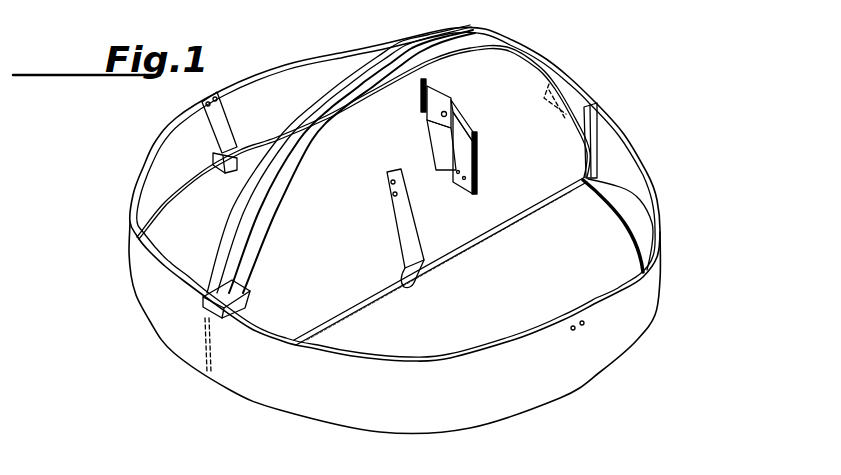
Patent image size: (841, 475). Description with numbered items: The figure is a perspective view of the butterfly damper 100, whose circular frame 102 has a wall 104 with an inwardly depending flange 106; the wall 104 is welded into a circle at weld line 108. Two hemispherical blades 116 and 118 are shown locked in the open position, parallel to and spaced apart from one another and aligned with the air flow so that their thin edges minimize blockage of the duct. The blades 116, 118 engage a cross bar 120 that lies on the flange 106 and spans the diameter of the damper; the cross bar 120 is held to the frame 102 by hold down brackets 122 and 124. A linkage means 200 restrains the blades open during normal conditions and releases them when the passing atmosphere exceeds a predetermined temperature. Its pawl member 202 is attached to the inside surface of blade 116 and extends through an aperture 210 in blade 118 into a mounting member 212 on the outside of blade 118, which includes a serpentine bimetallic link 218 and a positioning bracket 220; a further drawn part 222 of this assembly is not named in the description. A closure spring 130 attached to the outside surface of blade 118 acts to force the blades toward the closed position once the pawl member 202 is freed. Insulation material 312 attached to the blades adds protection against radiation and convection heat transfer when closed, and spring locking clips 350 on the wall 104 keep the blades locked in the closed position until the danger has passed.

The butterfly damper 100 is at (670, 91).
The frame 102 is at (437, 230).
The wall 104 is at (250, 378).
The inwardly depending flange 106 is at (620, 223).
The weld line 108 is at (203, 355).
The hemispherical blade 116 is at (399, 39).
The hemispherical blade 118 is at (545, 77).
The cross bar 120 is at (470, 243).
The hold down bracket 122 is at (588, 128).
The hold down bracket 124 is at (203, 302).
The closure spring 130 is at (413, 263).
The linkage means 200 is at (438, 135).
The pawl member 202 is at (423, 97).
The aperture 210 is at (430, 80).
The mounting member 212 is at (488, 139).
The serpentine bimetallic link 218 is at (443, 150).
The positioning bracket 220 is at (474, 153).
The flange 222 is at (461, 117).
The insulation material 312 is at (268, 212).
The spring locking clip 350 is at (203, 128).